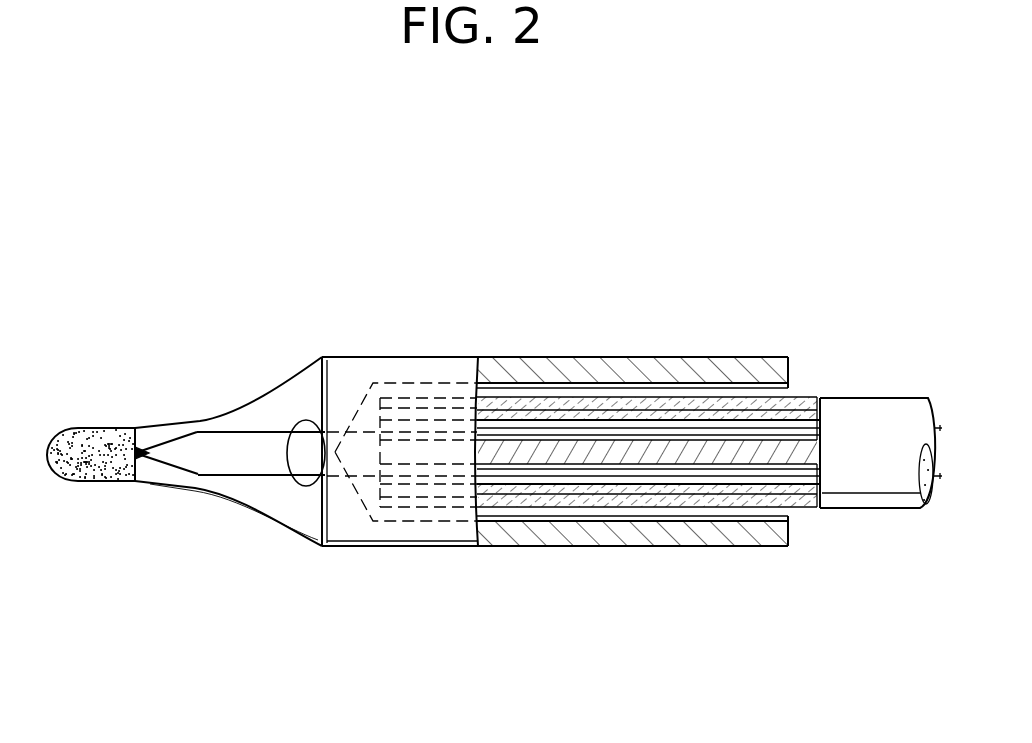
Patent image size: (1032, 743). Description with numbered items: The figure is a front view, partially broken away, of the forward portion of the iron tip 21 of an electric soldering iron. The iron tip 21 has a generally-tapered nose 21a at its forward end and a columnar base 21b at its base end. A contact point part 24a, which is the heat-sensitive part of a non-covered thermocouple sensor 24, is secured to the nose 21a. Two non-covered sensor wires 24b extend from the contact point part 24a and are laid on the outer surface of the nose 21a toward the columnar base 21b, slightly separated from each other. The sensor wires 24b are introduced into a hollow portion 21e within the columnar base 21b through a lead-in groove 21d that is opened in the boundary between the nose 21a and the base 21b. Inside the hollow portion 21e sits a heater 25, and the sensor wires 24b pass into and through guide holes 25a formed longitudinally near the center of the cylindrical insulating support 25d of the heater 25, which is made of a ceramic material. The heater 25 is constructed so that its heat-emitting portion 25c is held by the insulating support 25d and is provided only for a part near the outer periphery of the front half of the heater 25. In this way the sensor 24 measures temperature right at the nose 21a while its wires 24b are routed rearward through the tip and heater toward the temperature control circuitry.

The iron tip 21 is at (389, 560).
The nose 21a is at (95, 440).
The columnar base 21b is at (428, 368).
The lead-in groove 21d is at (288, 448).
The hollow portion 21e is at (778, 383).
The non-covered thermocouple sensor 24 is at (267, 430).
The contact point part 24a is at (143, 428).
The sensor wires 24b is at (233, 436).
The heater 25 is at (881, 395).
The guide holes 25a is at (545, 419).
The heat-emitting portion 25c is at (648, 398).
The insulating support 25d is at (718, 394).